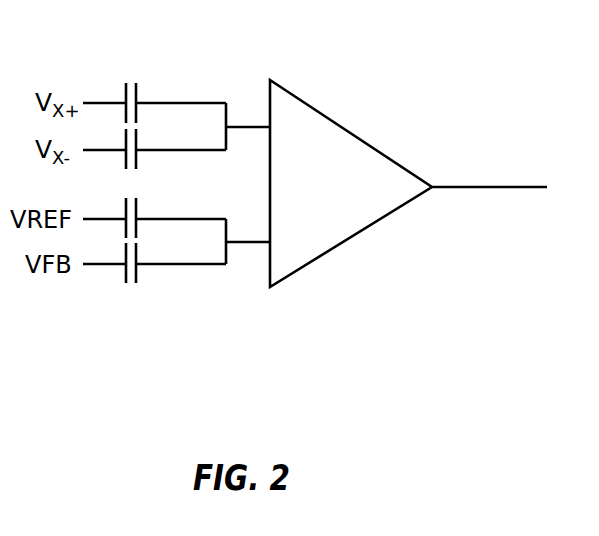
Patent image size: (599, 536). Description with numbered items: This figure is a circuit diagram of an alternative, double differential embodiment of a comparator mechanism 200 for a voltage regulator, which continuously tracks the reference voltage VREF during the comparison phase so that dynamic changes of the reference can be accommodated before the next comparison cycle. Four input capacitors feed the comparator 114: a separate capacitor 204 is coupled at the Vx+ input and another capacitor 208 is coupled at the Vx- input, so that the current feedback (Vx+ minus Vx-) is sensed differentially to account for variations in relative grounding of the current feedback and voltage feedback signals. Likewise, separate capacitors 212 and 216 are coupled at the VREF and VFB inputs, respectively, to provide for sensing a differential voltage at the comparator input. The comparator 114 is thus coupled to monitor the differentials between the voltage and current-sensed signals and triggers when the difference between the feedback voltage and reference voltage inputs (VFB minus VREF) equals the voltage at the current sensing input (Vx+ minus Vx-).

The comparator mechanism 200 is at (388, 72).
The capacitor 204 is at (140, 89).
The capacitor 208 is at (140, 136).
The capacitor 212 is at (140, 205).
The capacitor 216 is at (140, 251).
The comparator 114 is at (373, 145).